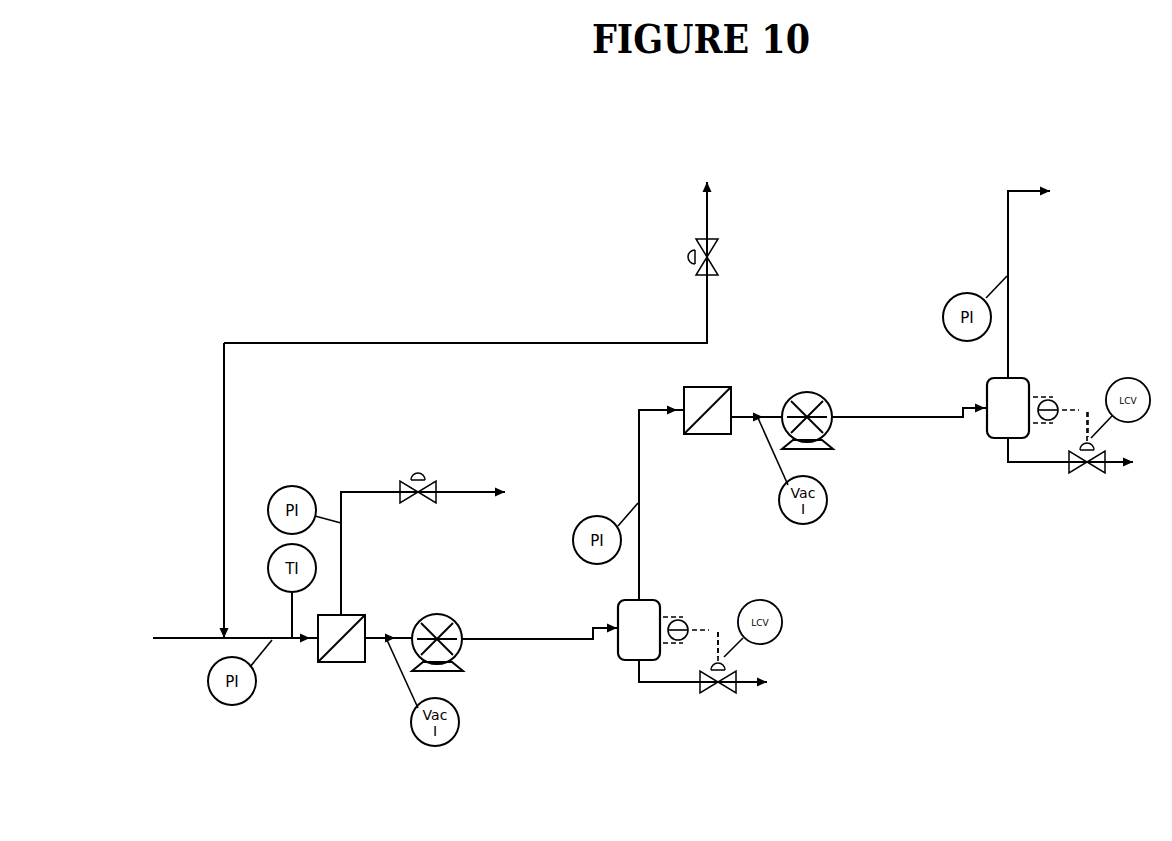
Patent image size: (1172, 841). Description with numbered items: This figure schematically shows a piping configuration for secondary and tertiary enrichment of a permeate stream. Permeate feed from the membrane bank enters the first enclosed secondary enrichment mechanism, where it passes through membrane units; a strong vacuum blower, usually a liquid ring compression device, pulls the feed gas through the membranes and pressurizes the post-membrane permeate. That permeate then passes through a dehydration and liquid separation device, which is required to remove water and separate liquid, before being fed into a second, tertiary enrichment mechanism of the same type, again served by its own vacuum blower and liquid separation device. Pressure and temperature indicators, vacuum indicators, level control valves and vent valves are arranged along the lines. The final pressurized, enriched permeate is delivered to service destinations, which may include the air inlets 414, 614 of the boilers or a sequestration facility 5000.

The air inlet 414 is at (1066, 272).
The air inlet 614 is at (1066, 272).
The sequestration facility 5000 is at (1066, 272).